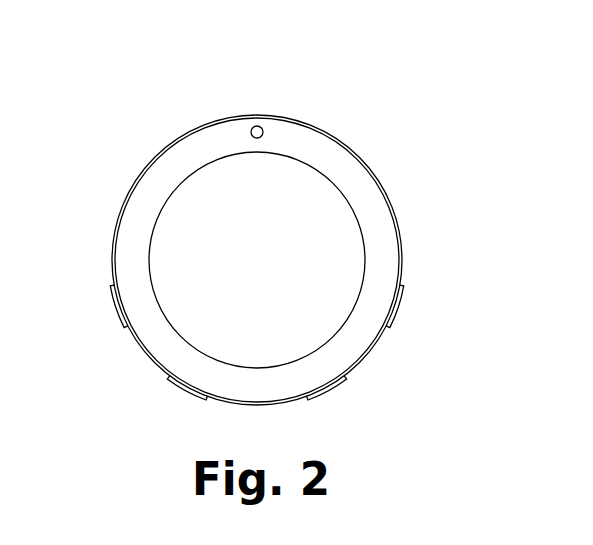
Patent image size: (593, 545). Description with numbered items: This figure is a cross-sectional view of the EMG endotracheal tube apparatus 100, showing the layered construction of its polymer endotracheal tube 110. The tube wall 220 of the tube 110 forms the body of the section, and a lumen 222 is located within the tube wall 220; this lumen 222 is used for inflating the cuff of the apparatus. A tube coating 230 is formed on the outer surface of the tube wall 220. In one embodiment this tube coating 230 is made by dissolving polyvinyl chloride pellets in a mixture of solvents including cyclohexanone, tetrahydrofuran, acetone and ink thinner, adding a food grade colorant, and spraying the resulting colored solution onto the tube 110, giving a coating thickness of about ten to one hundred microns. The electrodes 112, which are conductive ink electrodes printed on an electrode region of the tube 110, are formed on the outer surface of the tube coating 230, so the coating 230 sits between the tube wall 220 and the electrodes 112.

The EMG endotracheal tube apparatus 100 is at (100, 81).
The polymer endotracheal tube 110 is at (352, 130).
The electrodes 112 is at (114, 313).
The tube wall 220 is at (382, 205).
The lumen 222 is at (252, 130).
The tube coating 230 is at (404, 246).